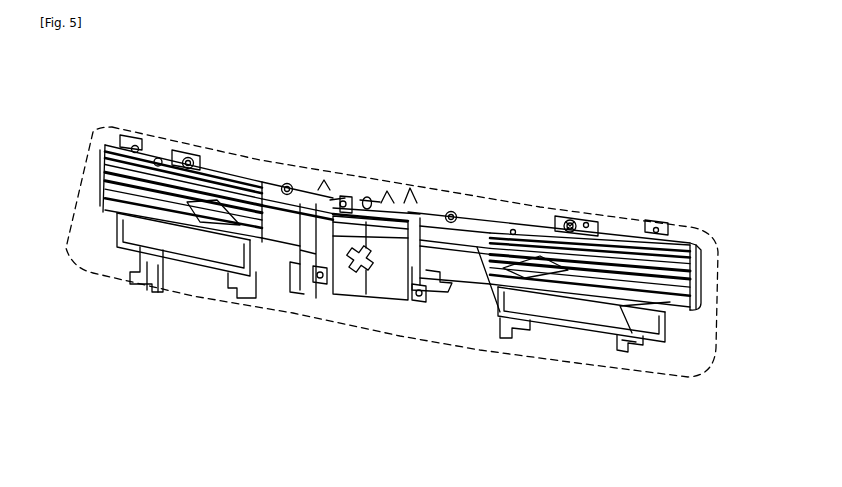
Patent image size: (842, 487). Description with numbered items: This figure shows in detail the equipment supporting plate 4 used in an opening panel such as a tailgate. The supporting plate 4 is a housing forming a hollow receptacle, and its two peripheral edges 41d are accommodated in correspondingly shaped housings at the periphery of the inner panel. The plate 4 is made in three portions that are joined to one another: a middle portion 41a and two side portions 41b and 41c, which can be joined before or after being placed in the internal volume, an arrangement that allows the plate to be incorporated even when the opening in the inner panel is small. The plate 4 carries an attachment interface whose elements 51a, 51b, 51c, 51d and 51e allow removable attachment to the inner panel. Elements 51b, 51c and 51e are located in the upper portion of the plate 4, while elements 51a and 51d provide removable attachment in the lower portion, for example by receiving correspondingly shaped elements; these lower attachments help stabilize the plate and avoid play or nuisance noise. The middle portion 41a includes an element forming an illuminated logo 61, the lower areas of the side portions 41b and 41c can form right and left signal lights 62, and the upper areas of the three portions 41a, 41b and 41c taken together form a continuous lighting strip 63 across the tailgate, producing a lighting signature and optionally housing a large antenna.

The equipment supporting plate 4 is at (303, 360).
The middle portion 41a is at (353, 197).
The side portion 41b is at (200, 148).
The side portion 41c is at (541, 208).
The peripheral edge 41d is at (700, 280).
The attachment interface element 51a is at (632, 357).
The attachment interface element 51b is at (130, 138).
The attachment interface element 51c is at (200, 157).
The attachment interface element 51d is at (423, 300).
The attachment interface element 51e is at (290, 181).
The illuminated logo 61 is at (367, 267).
The signal light 62 is at (155, 262).
The continuous lighting strip 63 is at (157, 160).